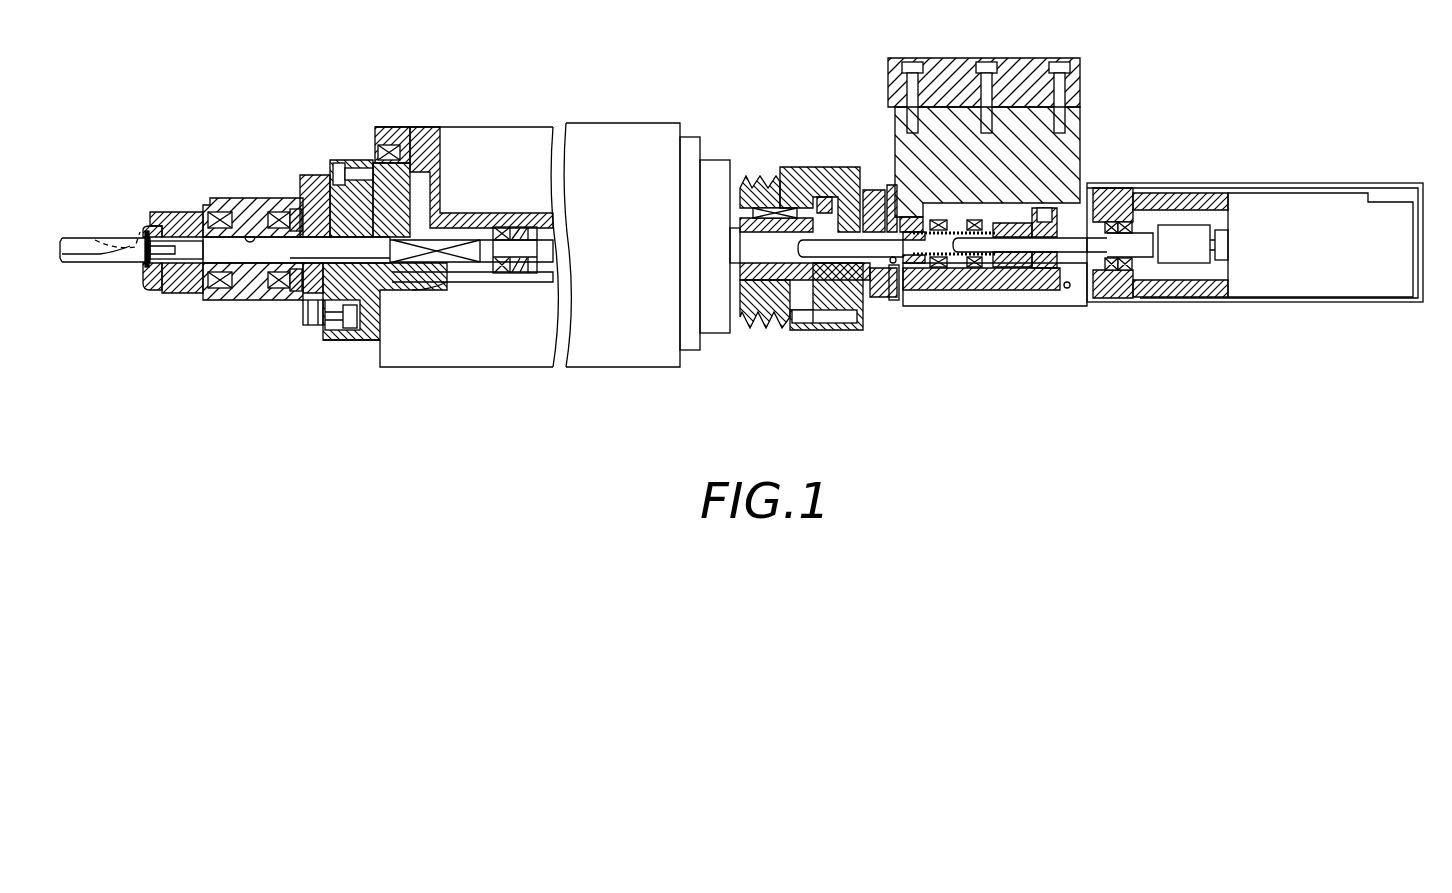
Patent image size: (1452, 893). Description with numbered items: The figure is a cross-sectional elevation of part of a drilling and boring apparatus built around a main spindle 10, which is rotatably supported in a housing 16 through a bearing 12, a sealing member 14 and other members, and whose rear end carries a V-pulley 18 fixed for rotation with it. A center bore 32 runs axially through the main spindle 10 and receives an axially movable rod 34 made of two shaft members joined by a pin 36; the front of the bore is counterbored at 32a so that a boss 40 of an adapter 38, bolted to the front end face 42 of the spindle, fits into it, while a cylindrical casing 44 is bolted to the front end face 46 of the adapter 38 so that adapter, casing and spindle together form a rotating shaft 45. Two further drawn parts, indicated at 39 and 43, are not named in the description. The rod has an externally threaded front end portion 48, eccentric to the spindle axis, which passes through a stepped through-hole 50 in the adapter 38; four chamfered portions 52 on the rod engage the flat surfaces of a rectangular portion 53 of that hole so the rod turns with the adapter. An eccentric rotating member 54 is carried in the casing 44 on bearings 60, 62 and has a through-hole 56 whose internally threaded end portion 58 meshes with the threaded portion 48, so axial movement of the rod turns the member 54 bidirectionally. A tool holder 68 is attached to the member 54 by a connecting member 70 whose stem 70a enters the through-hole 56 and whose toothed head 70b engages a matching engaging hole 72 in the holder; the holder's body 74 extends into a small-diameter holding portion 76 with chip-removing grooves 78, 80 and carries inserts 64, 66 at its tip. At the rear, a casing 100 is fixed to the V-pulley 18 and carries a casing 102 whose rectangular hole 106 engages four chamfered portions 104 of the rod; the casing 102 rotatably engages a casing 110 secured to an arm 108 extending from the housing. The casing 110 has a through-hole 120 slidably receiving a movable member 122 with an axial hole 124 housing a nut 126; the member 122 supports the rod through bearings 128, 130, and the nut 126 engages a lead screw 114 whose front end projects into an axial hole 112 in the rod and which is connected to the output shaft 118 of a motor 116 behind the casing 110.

The main spindle 10 is at (372, 331).
The bearing 12 is at (412, 167).
The sealing member 14 is at (390, 128).
The housing 16 is at (402, 134).
The V-pulley 18 is at (760, 318).
The center bore 32 is at (738, 262).
The counterbored front end portion 32a is at (402, 279).
The rod 34 is at (736, 236).
The pin 36 is at (520, 232).
The adapter 38 is at (343, 301).
The flange block 39 is at (337, 161).
The boss 40 is at (412, 281).
The front end face 42 is at (352, 168).
The nut recess 43 is at (310, 328).
The cylindrical casing 44 is at (218, 300).
The rotating shaft 45 is at (344, 345).
The front end face 46 is at (314, 176).
The externally threaded front end portion 48 is at (300, 294).
The stepped through-hole 50 is at (386, 274).
The chamfered portions 52 is at (477, 252).
The rectangular portion 53 is at (407, 238).
The eccentric rotating member 54 is at (191, 224).
The through-hole 56 is at (275, 212).
The internally threaded end portion 58 is at (292, 300).
The bearing 60 is at (216, 212).
The bearing 62 is at (295, 210).
The insert 64 is at (68, 264).
The insert 66 is at (64, 236).
The tool holder 68 is at (143, 289).
The connecting member 70 is at (195, 219).
The stem 70a is at (185, 262).
The head 70b is at (150, 280).
The engaging hole 72 is at (147, 231).
The body 74 is at (170, 212).
The holding portion 76 is at (112, 264).
The chip-removing groove 78 is at (97, 264).
The chip-removing groove 80 is at (128, 236).
The casing 100 is at (826, 168).
The casing 102 is at (873, 191).
The chamfered portions 104 is at (873, 250).
The rectangular hole 106 is at (894, 266).
The arm 108 is at (1025, 59).
The casing 110 is at (1073, 138).
The axial hole 112 is at (947, 268).
The lead screw 114 is at (1020, 253).
The motor 116 is at (1316, 290).
The output shaft 118 is at (1216, 265).
The through-hole 120 is at (1070, 289).
The movable member 122 is at (972, 291).
The axial hole 124 is at (1013, 268).
The nut 126 is at (1057, 283).
The bearing 128 is at (936, 217).
The bearing 130 is at (980, 215).